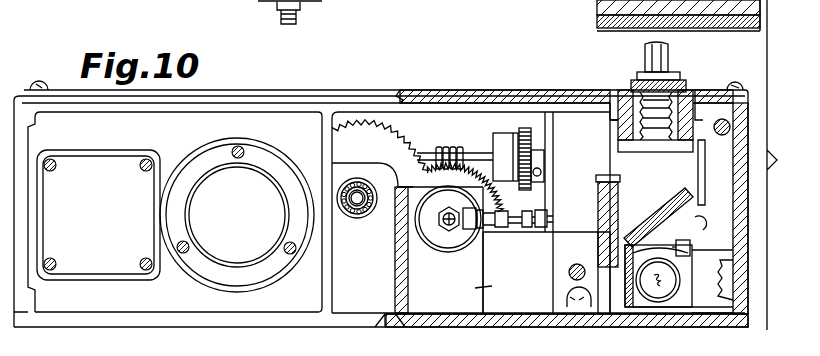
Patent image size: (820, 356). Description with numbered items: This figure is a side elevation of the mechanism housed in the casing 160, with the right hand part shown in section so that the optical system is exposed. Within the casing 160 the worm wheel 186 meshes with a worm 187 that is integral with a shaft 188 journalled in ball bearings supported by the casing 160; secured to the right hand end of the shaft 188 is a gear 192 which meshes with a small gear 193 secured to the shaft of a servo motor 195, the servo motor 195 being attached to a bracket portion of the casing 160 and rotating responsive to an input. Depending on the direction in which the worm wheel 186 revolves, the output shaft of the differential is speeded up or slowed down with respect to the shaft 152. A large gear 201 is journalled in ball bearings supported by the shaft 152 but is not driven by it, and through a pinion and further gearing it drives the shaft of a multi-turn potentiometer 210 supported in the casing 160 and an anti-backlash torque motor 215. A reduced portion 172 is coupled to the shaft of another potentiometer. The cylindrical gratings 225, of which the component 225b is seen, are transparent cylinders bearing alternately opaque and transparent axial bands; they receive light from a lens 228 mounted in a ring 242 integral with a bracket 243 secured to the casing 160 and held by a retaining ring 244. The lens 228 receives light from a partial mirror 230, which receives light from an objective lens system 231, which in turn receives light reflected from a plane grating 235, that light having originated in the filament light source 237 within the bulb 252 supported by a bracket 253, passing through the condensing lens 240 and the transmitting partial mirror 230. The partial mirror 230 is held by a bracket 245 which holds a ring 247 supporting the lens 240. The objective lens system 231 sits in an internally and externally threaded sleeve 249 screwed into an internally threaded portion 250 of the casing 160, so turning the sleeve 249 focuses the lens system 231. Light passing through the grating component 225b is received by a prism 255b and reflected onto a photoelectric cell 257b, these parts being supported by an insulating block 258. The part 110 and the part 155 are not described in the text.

The housing 110 is at (381, 218).
The casing 160 is at (422, 98).
The anti-backlash torque motor 215 is at (98, 215).
The multi-turn potentiometer 210 is at (237, 215).
The large gear 201 is at (352, 133).
The bearing 155 is at (358, 196).
The shaft 152 is at (361, 206).
The cylindrical gratings 225 is at (425, 240).
The reduced portion 172 is at (450, 226).
The worm wheel 186 is at (502, 209).
The worm 187 is at (449, 148).
The shaft 188 is at (479, 154).
The small gear 193 is at (546, 166).
The gear 192 is at (529, 129).
The servo motor 195 is at (583, 122).
The prism 255b is at (528, 234).
The photoelectric cell 257b is at (549, 240).
The insulating block 258 is at (483, 289).
The retaining ring 244 is at (598, 252).
The objective lens system 231 is at (669, 62).
The internally and externally threaded sleeve 249 is at (633, 138).
The internally threaded portion 250 is at (613, 96).
The lens 228 is at (620, 212).
The ring 242 is at (610, 176).
The partial mirror 230 is at (661, 212).
The light source 237 is at (661, 300).
The condensing lens 240 is at (666, 256).
The bracket 243 is at (610, 300).
The bulb 252 is at (640, 302).
The bracket 245 is at (692, 275).
The ring 247 is at (701, 262).
The bracket 253 is at (717, 302).
The plane grating 235 is at (600, 23).
The cylindrical grating component 225b is at (340, 6).